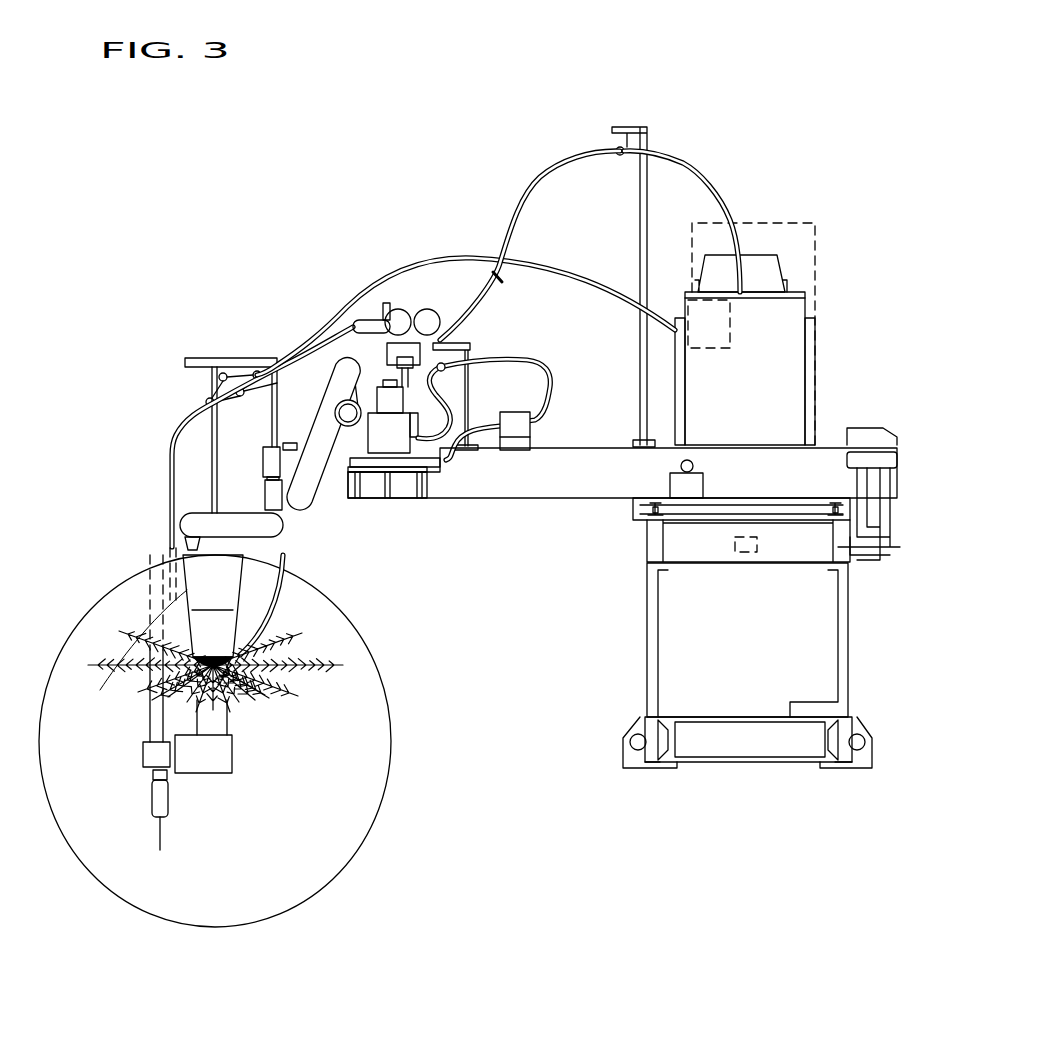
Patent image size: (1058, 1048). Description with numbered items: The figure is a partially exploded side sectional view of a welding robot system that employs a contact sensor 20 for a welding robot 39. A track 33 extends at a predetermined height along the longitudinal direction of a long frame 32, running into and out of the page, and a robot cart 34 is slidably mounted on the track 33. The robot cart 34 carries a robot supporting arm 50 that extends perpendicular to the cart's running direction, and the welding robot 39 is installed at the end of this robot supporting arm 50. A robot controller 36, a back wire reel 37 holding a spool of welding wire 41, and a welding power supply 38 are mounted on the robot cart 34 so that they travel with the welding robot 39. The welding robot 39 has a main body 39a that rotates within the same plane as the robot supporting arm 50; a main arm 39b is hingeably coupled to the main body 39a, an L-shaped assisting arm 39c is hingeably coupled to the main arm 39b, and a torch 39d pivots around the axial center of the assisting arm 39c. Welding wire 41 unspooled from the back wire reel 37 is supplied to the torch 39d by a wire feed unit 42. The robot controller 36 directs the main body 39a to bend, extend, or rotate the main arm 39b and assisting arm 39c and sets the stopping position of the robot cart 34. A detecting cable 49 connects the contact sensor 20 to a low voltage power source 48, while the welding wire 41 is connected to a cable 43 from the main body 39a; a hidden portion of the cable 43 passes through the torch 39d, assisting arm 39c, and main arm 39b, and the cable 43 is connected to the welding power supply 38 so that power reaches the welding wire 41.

The contact sensor 20 is at (290, 710).
The long frame 32 is at (850, 637).
The track 33 is at (656, 516).
The robot cart 34 is at (805, 490).
The robot controller 36 is at (782, 308).
The back wire reel 37 is at (757, 255).
The welding power supply 38 is at (810, 223).
The welding robot 39 is at (371, 358).
The main body 39a is at (393, 437).
The main arm 39b is at (307, 480).
The assisting arm 39c is at (242, 510).
The torch 39d is at (170, 780).
The welding wire 41 is at (527, 192).
The wire feed unit 42 is at (396, 307).
The cable 43 is at (504, 357).
The low voltage power source 48 is at (713, 335).
The detecting cable 49 is at (595, 272).
The robot supporting arm 50 is at (552, 487).